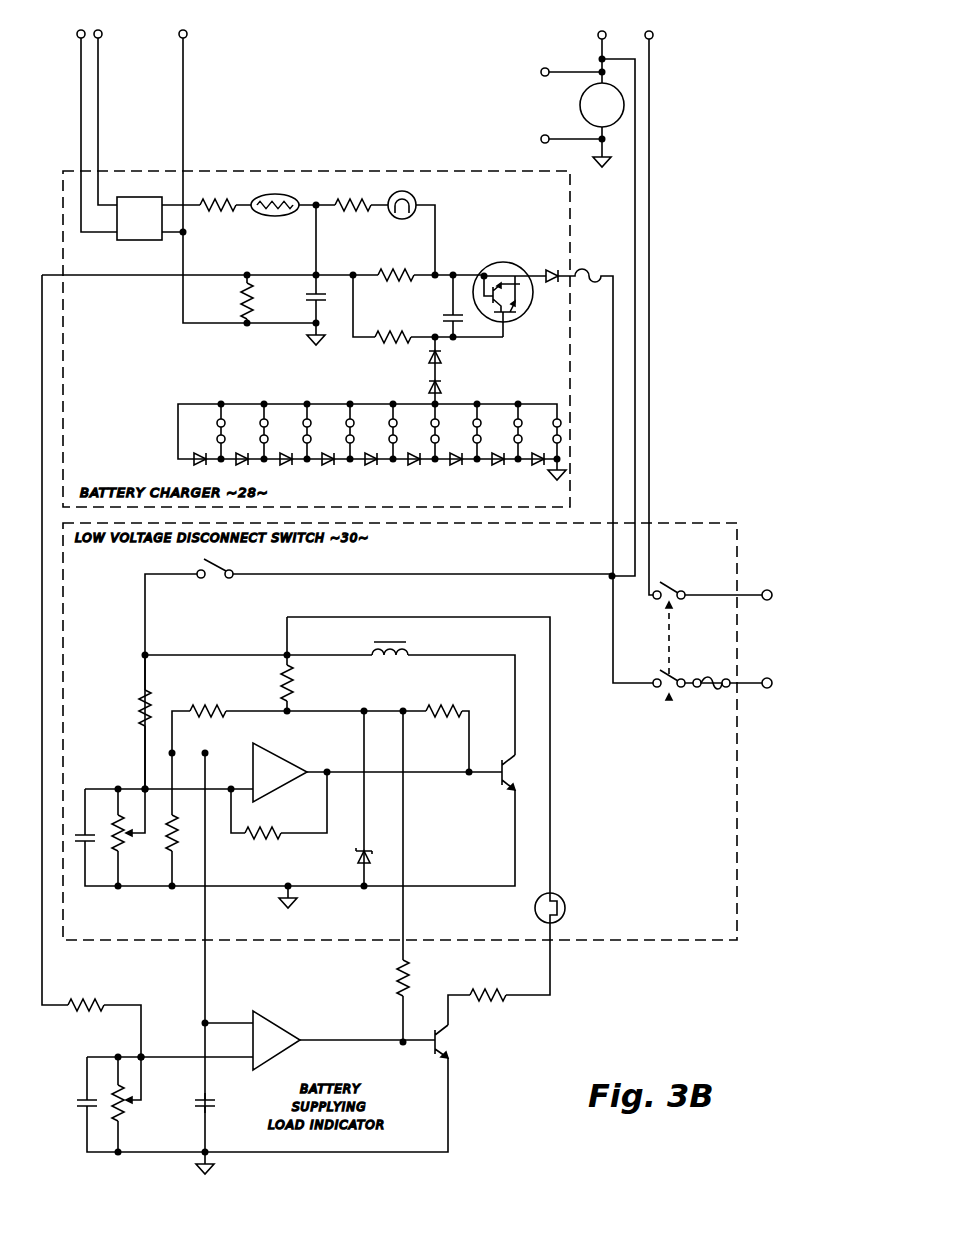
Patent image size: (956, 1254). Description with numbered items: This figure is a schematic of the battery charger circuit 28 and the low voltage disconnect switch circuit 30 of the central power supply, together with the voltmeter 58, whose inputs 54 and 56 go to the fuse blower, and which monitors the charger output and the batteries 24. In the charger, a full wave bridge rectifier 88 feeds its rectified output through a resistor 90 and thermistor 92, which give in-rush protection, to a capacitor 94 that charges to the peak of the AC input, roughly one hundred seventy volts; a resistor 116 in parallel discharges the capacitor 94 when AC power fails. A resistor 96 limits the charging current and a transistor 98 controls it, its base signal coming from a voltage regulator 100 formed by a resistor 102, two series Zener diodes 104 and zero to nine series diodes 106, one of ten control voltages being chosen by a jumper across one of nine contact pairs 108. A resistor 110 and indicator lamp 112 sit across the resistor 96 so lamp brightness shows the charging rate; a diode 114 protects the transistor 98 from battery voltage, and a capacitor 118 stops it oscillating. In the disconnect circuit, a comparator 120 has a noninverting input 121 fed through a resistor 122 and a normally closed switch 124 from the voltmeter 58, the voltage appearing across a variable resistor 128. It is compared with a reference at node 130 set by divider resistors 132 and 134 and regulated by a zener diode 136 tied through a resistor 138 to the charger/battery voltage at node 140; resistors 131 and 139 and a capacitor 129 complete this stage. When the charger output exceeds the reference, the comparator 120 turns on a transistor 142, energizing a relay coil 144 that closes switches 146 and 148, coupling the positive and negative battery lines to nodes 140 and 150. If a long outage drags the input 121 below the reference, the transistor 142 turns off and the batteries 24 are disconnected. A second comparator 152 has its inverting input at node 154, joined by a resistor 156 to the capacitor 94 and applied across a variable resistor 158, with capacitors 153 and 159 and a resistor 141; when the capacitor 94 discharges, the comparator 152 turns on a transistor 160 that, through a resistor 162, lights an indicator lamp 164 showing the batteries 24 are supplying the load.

The batteries 24 is at (727, 642).
The battery charger circuit 28 is at (316, 339).
The low voltage disconnect switch circuit 30 is at (400, 731).
The input 54 is at (536, 72).
The input 56 is at (541, 139).
The voltmeter 58 is at (580, 105).
The full wave bridge rectifier 88 is at (133, 198).
The resistor 90 is at (203, 214).
The thermistor 92 is at (267, 216).
The capacitor 94 is at (312, 294).
The resistor 96 is at (392, 278).
The transistor 98 is at (524, 312).
The voltage regulator 100 is at (404, 352).
The resistor 102 is at (388, 338).
The Zener diodes 104 is at (445, 377).
The diodes 106 is at (436, 462).
The contact pairs 108 is at (565, 424).
The resistor 110 is at (340, 212).
The indicator lamp 112 is at (395, 220).
The diode 114 is at (552, 268).
The resistor 116 is at (240, 294).
The capacitor 118 is at (444, 318).
The comparator 120 is at (300, 762).
The noninverting input 121 is at (143, 785).
The resistor 122 is at (141, 710).
The switch 124 is at (226, 576).
The variable resistor 128 is at (122, 848).
The capacitor 129 is at (82, 852).
The node 130 is at (176, 753).
The resistor 131 is at (265, 836).
The resistor 132 is at (170, 834).
The resistor 134 is at (200, 707).
The zener diode 136 is at (356, 862).
The resistor 138 is at (294, 686).
The resistor 139 is at (438, 708).
The node 140 is at (608, 578).
The resistor 141 is at (395, 966).
The transistor 142 is at (499, 777).
The relay coil 144 is at (389, 662).
The switch 146 is at (668, 669).
The switch 148 is at (672, 592).
The node 150 is at (650, 462).
The comparator 152 is at (292, 1029).
The capacitor 153 is at (208, 1110).
The node 154 is at (142, 1056).
The resistor 156 is at (86, 1002).
The variable resistor 158 is at (124, 1115).
The capacitor 159 is at (80, 1104).
The transistor 160 is at (443, 1046).
The resistor 162 is at (504, 990).
The indicator lamp 164 is at (566, 907).